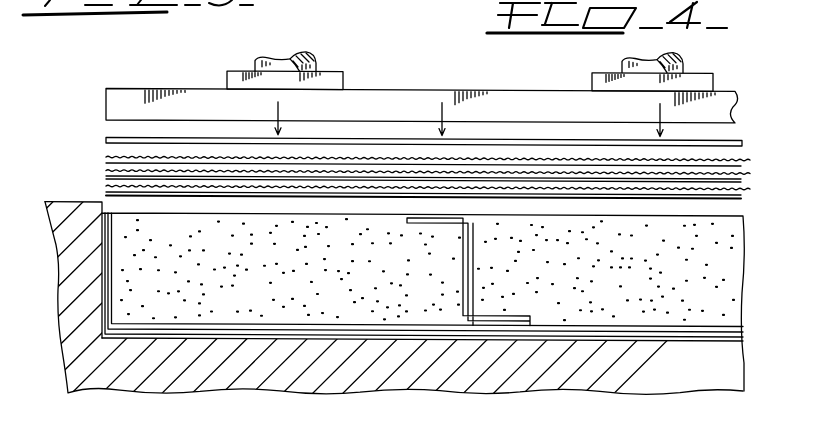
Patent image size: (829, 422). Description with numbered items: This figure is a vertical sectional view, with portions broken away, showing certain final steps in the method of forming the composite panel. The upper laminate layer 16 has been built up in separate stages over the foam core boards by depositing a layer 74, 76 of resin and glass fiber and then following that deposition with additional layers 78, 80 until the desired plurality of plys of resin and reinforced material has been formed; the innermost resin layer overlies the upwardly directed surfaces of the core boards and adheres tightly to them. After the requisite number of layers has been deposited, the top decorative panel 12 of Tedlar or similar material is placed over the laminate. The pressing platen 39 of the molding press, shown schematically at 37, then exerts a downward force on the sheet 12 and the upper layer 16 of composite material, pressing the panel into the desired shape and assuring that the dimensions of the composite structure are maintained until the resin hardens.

The top decorative panel 12 is at (410, 160).
The upper laminate layer 16 is at (421, 180).
The molding press 37 is at (576, 59).
The platen 39 is at (377, 101).
The layer of resin and glass fiber 74 is at (742, 214).
The layer of resin and glass fiber 76 is at (741, 189).
The additional layer 78 is at (740, 178).
The additional layer 80 is at (737, 141).